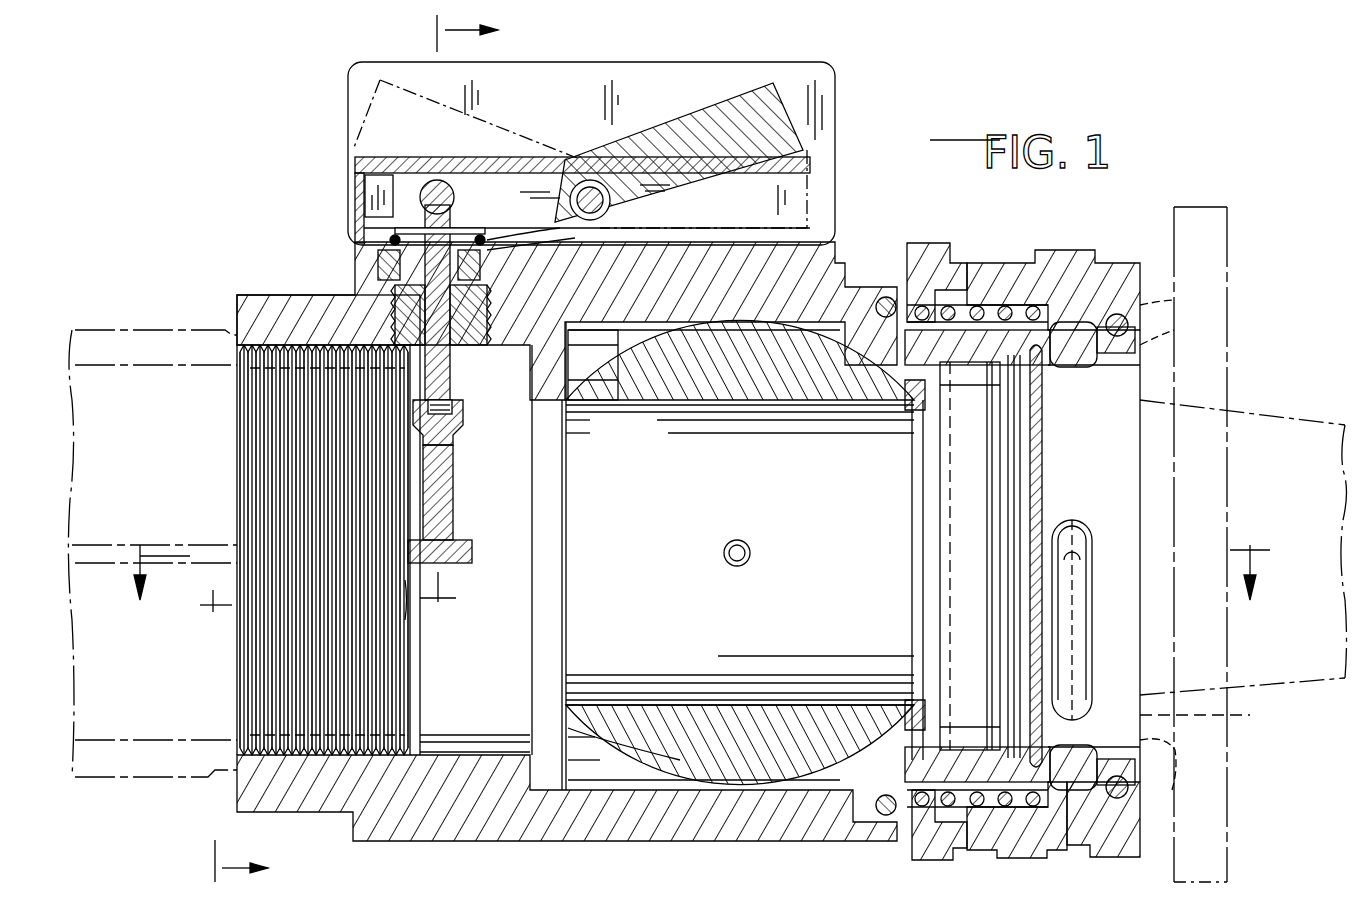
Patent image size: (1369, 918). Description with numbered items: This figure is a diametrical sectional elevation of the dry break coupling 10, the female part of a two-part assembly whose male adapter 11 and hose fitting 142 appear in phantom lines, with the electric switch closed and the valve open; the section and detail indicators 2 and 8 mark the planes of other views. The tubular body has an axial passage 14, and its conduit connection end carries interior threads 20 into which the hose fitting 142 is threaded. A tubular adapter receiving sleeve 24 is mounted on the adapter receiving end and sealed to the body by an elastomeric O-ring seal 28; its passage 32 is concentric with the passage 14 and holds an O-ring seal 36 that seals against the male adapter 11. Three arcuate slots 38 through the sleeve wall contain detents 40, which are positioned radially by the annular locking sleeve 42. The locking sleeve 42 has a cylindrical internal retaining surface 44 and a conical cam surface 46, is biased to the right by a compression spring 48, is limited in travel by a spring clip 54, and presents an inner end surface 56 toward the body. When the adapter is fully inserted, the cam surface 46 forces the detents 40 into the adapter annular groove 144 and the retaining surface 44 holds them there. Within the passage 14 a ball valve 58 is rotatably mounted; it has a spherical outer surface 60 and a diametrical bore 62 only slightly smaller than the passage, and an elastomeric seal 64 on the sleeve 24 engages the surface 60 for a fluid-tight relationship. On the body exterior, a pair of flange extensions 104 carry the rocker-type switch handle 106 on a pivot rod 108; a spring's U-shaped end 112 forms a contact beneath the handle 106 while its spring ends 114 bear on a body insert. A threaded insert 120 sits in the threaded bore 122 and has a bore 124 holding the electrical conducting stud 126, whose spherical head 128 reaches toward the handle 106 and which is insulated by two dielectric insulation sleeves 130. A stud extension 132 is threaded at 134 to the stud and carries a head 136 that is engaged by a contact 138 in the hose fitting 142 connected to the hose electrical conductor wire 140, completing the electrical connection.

The section line 2- 2 is at (700, 592).
The section line 8- 8 is at (368, 452).
The dry break coupling 10 is at (470, 852).
The male adapter 11 is at (1235, 752).
The passage 14 is at (630, 355).
The interior threads 20 is at (305, 755).
The tubular adapter receiving sleeve 24 is at (975, 370).
The elastomeric O-ring seal 28 is at (882, 297).
The passage 32 is at (978, 745).
The O-ring seal 36 is at (1020, 525).
The arcuate slots 38 is at (1090, 285).
The detents 40 is at (1075, 520).
The locking sleeve 42 is at (1010, 262).
The cylindrical internal retaining surface 44 is at (1060, 850).
The conical cam surface 46 is at (1125, 312).
The compression spring 48 is at (912, 845).
The spring clip 54 is at (1174, 300).
The inner end surface 56 is at (920, 250).
The ball valve 58 is at (770, 395).
The spherical outer surface 60 is at (575, 718).
The bore 62 is at (628, 702).
The elastomeric seal 64 is at (905, 415).
The flange extensions 104 is at (600, 115).
The switch handle 106 is at (655, 130).
The pivot rod 108 is at (612, 205).
The U-shaped spring end 112 is at (462, 225).
The spring ends 114 is at (555, 262).
The threaded insert 120 is at (390, 316).
The threaded bore 122 is at (593, 365).
The bore 124 is at (380, 283).
The electrical conducting stud 126 is at (385, 247).
The spherical head 128 is at (442, 185).
The dielectric insulation sleeves 130 is at (462, 372).
The stud extension 132 is at (455, 500).
The threads 134 is at (455, 405).
The head 136 is at (472, 552).
The contact 138 is at (412, 620).
The hose electrical conductor wire 140 is at (155, 545).
The hose fitting 142 is at (148, 778).
The adapter annular groove 144 is at (1221, 743).